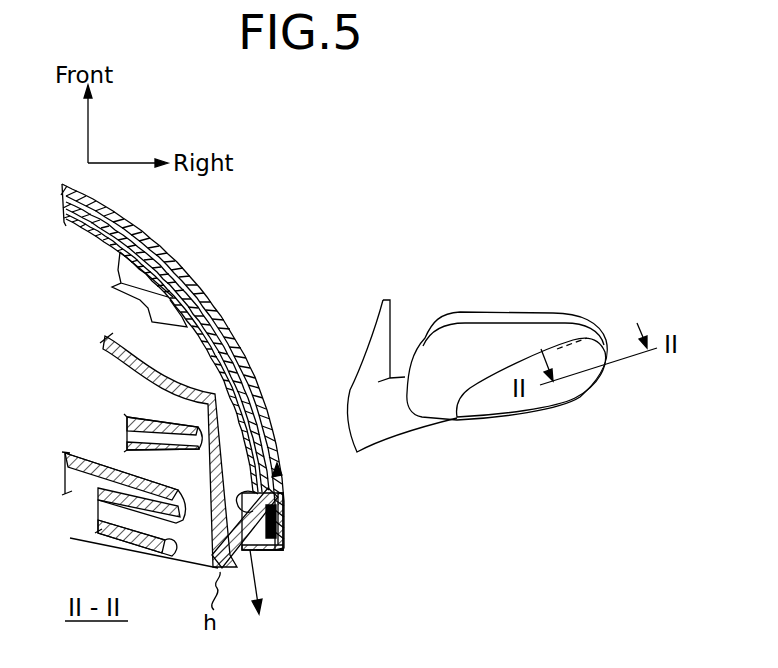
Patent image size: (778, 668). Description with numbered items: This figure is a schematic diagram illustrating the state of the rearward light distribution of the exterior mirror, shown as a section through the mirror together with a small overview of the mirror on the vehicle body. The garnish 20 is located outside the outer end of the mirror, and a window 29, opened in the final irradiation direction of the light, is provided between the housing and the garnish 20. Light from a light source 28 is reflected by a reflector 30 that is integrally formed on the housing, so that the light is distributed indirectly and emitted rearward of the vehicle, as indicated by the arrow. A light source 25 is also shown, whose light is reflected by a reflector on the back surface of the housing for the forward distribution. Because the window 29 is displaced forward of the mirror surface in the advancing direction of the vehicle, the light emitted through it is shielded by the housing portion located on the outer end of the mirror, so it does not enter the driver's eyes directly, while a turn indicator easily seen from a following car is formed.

The garnish 20 is at (497, 337).
The light source 25 is at (119, 284).
The light source 28 is at (268, 526).
The window 29 is at (270, 551).
The reflector 30 is at (278, 490).